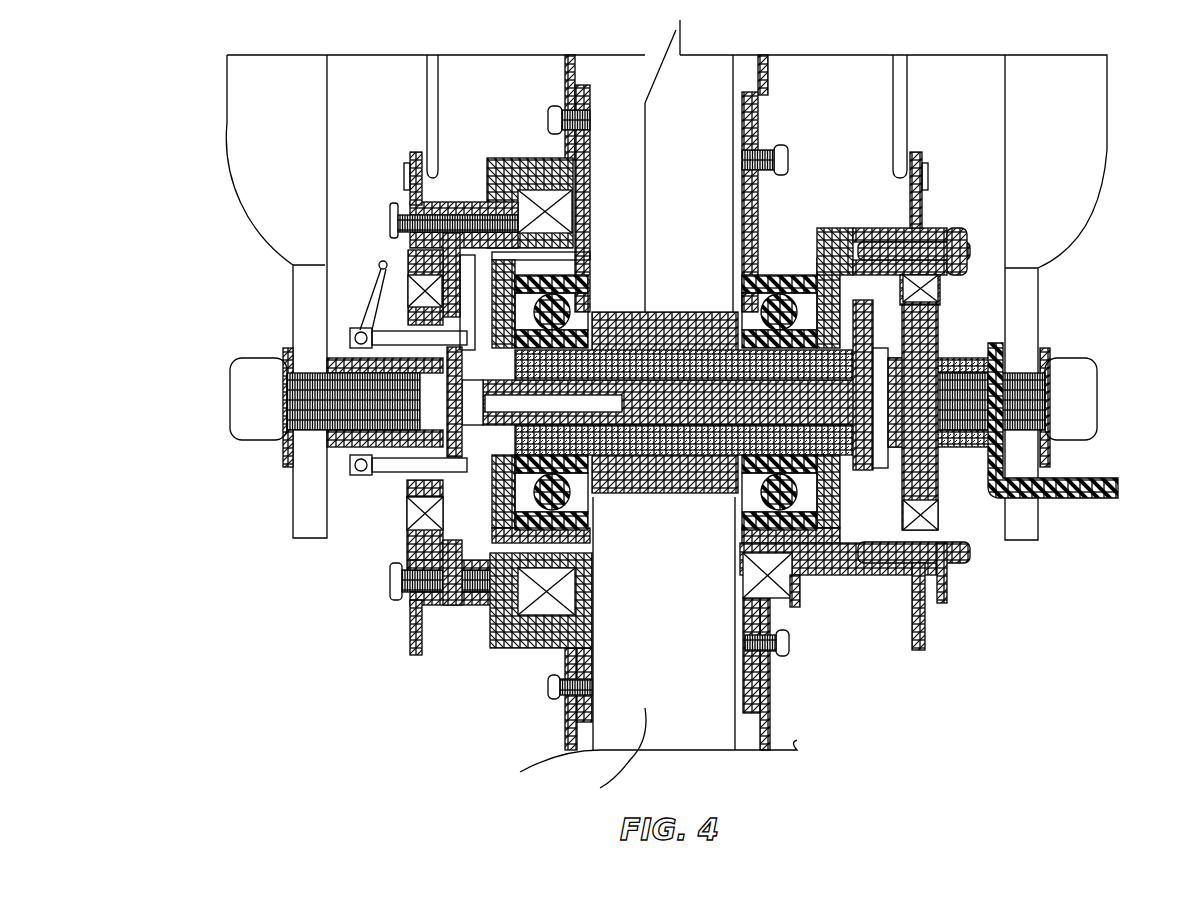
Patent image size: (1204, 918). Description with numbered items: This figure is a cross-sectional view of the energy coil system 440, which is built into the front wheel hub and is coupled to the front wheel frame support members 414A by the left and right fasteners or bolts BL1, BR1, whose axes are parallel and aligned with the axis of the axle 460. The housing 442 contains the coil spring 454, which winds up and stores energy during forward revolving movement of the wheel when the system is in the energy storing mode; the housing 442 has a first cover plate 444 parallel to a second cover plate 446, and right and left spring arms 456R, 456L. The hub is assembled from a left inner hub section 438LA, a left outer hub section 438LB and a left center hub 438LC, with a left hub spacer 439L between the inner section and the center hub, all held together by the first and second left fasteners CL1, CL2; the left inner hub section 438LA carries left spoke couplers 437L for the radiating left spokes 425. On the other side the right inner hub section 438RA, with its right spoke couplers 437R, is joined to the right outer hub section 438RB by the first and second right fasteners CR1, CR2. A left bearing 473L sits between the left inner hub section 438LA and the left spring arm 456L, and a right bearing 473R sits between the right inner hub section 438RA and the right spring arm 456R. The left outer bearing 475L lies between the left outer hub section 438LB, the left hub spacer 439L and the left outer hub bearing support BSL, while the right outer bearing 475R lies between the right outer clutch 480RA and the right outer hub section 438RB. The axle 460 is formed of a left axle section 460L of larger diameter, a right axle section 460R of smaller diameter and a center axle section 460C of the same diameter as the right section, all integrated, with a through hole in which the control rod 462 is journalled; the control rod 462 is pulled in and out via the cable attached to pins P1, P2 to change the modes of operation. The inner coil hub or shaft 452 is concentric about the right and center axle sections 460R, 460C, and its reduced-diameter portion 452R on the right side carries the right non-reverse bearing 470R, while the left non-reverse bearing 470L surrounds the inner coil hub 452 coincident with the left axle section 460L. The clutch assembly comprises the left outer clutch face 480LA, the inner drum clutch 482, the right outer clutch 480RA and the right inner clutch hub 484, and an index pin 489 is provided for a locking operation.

The front wheel frame support members 414A is at (237, 122).
The left spokes 425 is at (430, 100).
The housing 442 is at (835, 40).
The first cover plate 444 is at (575, 75).
The second cover plate 446 is at (766, 65).
The left spring arm 456L is at (593, 155).
The right spring arm 456R is at (772, 75).
The energy coil system 440 is at (684, 145).
The inner coil hub or shaft 452 is at (700, 495).
The coil spring 454 is at (640, 755).
The axle 460 is at (518, 372).
The left axle section 460L is at (440, 410).
The right axle section 460R is at (880, 440).
The center axle section 460C is at (641, 450).
The control rod 462 is at (1040, 400).
The left fastener or bolt BL1 is at (240, 425).
The right fastener or bolt BR1 is at (1085, 425).
The left non-reverse bearing 470L is at (578, 487).
The right non-reverse bearing 470R is at (800, 570).
The left bearing 473L is at (545, 625).
The right bearing 473R is at (828, 235).
The left inner hub section 438LA is at (497, 195).
The left outer hub section 438LB is at (405, 203).
The left center hub 438LC is at (424, 650).
The right inner hub section 438RA is at (925, 238).
The right outer hub section 438RB is at (975, 232).
The left spoke couplers 437L is at (405, 178).
The right spoke couplers 437R is at (930, 180).
The left hub spacer 439L is at (448, 265).
The left outer bearing 475L is at (408, 290).
The right outer bearing 475R is at (940, 290).
The left outer clutch face 480LA is at (418, 514).
The right outer clutch 480RA is at (935, 500).
The inner drum clutch 482 is at (458, 608).
The right inner clutch hub 484 is at (940, 575).
The index pin 489 is at (1120, 488).
The portion of inner coil hub or shaft 452R is at (962, 558).
The first left fastener CL1 is at (390, 225).
The second left fastener CL2 is at (395, 605).
The first right fastener CR1 is at (965, 252).
The second right fastener CR2 is at (925, 600).
The pin P1 is at (350, 338).
The pin P2 is at (350, 466).
The left outer hub bearing support BSL is at (408, 488).